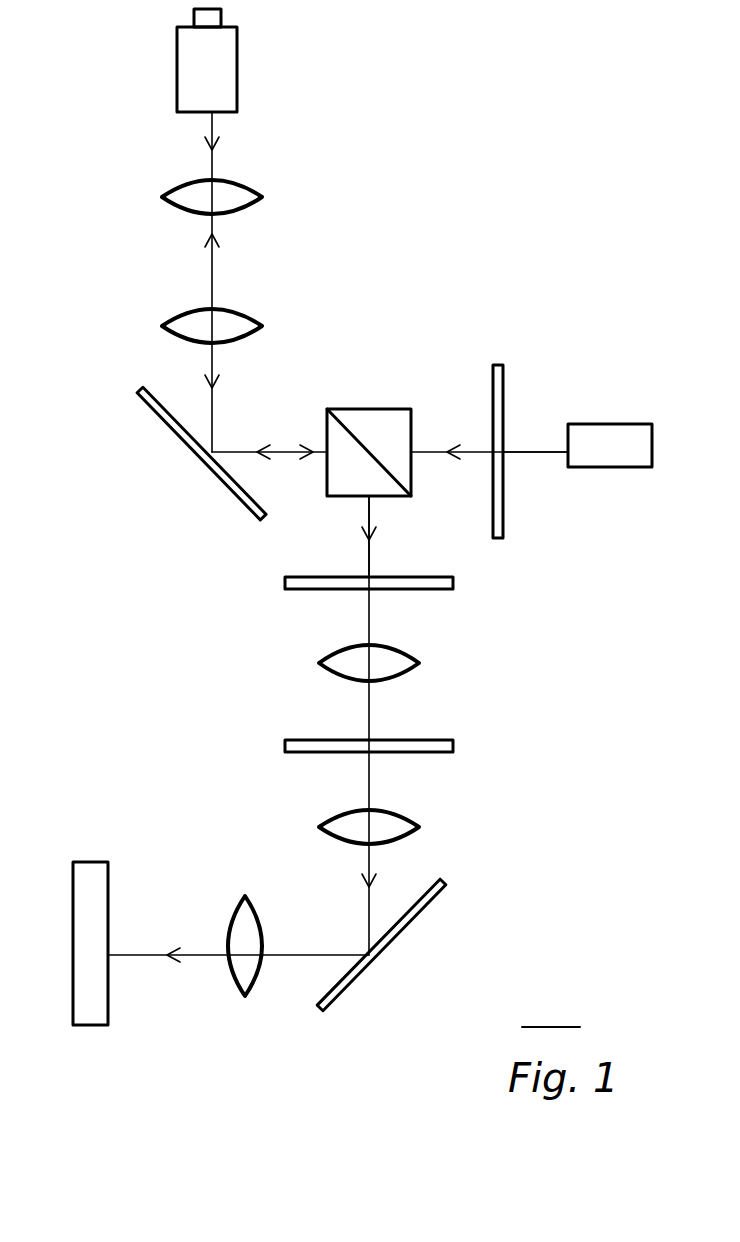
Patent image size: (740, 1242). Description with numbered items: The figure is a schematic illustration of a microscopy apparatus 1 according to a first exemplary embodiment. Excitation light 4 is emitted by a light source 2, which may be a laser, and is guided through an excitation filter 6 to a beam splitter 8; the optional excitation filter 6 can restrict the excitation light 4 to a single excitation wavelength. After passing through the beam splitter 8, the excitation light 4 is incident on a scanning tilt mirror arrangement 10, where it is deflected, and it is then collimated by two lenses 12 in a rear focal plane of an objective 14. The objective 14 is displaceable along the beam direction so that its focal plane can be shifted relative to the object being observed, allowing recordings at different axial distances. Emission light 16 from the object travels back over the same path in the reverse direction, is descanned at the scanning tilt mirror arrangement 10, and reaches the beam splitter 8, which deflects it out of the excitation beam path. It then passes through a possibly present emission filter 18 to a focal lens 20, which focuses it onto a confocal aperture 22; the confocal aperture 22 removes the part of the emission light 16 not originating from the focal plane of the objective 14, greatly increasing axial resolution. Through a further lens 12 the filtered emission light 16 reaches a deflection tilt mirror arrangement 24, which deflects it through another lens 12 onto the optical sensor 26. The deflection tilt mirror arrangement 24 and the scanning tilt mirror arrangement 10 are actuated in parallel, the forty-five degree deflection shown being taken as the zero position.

The microscopy apparatus 1 is at (448, 157).
The light source 2 is at (612, 452).
The excitation light 4 is at (517, 450).
The excitation filter 6 is at (496, 365).
The beam splitter 8 is at (347, 409).
The scanning tilt mirror arrangement 10 is at (166, 431).
The lens 12 is at (245, 210).
The objective 14 is at (222, 68).
The emission light 16 is at (372, 560).
The emission filter 18 is at (453, 588).
The focal lens 20 is at (408, 670).
The confocal aperture 22 is at (455, 745).
The deflection tilt mirror arrangement 24 is at (404, 933).
The optical sensor 26 is at (92, 862).